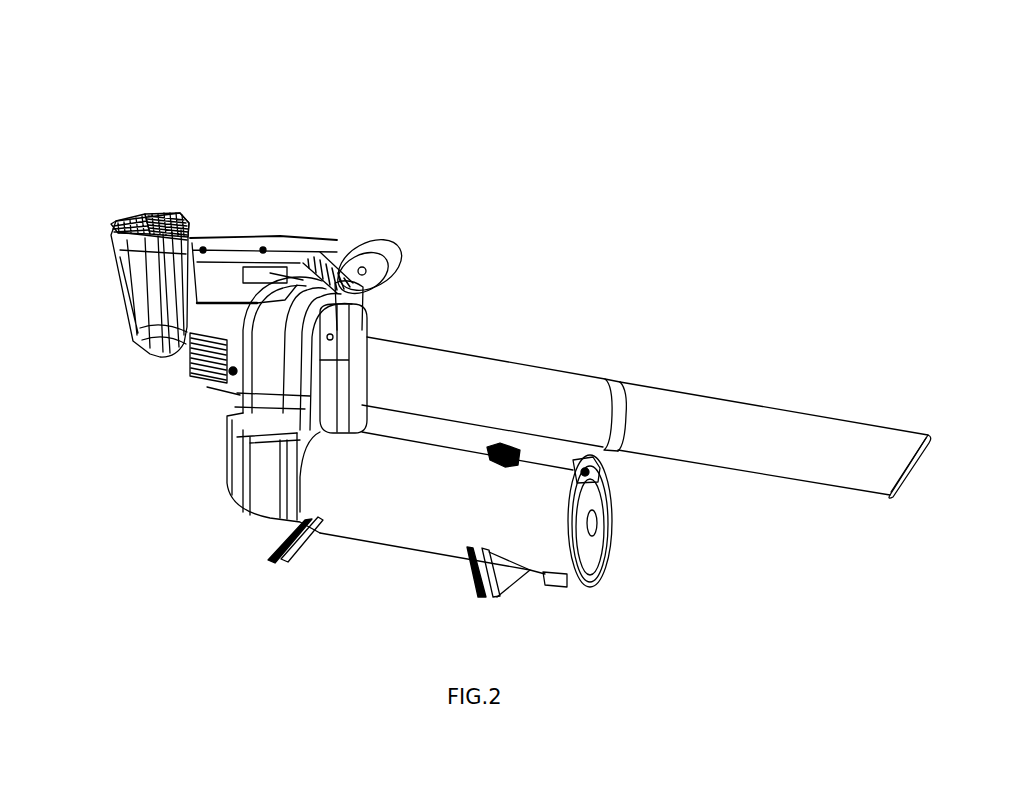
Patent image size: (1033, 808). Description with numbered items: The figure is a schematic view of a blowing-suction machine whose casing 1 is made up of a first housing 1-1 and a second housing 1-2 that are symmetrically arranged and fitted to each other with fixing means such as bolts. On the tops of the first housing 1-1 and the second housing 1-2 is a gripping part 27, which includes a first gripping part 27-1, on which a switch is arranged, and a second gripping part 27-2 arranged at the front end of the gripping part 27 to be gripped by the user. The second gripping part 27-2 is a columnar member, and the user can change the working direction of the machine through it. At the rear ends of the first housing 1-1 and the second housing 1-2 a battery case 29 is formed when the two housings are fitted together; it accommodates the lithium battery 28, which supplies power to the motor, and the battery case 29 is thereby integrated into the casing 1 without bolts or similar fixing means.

The casing 1 is at (93, 409).
The first housing 1-1 is at (207, 387).
The second housing 1-2 is at (184, 357).
The gripping part 27 is at (497, 123).
The first gripping part 27-1 is at (227, 243).
The second gripping part 27-2 is at (373, 238).
The lithium battery 28 is at (128, 216).
The battery case 29 is at (170, 213).